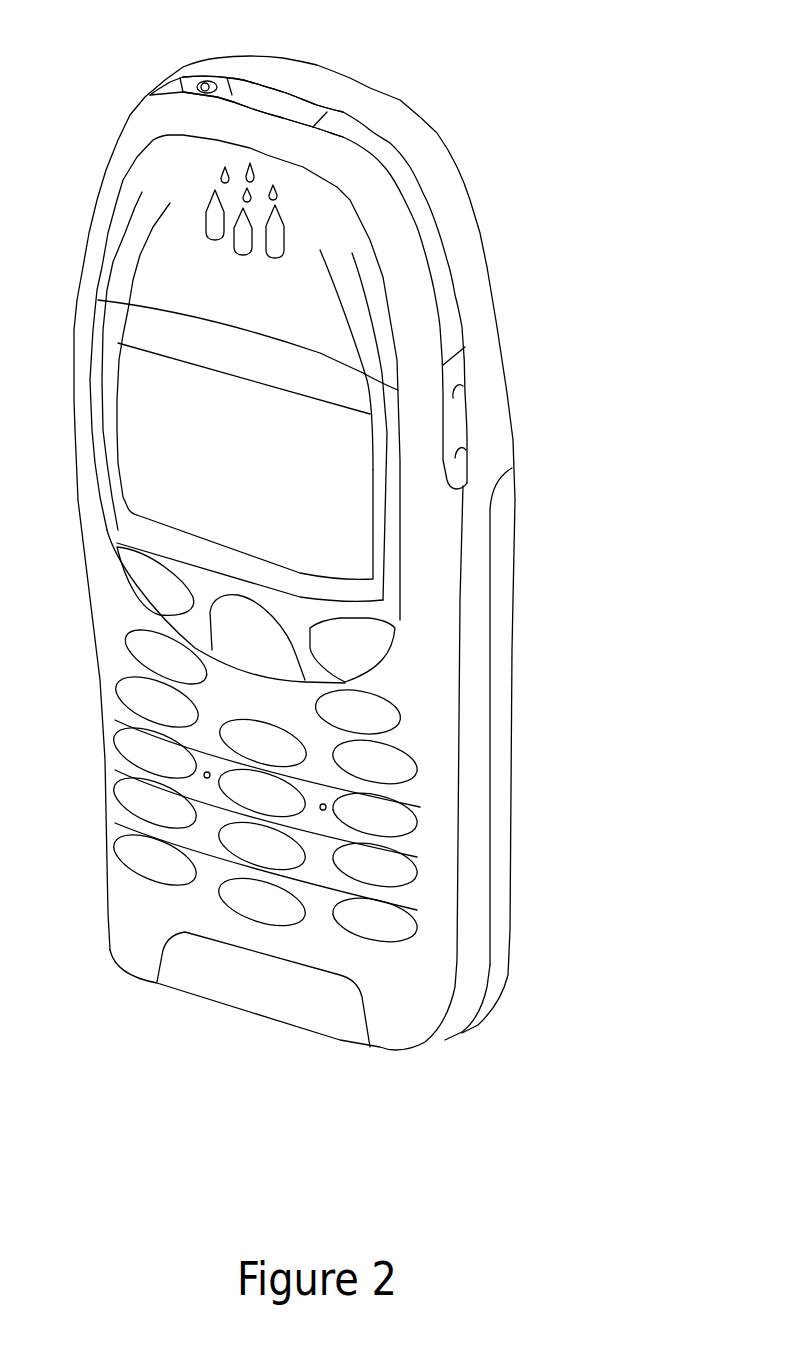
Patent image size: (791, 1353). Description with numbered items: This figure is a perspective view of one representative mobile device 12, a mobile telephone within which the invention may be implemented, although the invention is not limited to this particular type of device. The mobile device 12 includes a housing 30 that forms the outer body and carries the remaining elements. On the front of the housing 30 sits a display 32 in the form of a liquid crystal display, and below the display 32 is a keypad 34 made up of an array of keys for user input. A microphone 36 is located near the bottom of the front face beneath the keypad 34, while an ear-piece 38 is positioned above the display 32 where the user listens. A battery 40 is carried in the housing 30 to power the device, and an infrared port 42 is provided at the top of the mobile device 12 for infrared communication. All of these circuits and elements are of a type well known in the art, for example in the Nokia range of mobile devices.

The mobile device 12 is at (442, 68).
The housing 30 is at (473, 262).
The display 32 is at (347, 517).
The keypad 34 is at (370, 927).
The microphone 36 is at (190, 973).
The ear-piece 38 is at (233, 205).
The battery 40 is at (500, 905).
The infrared port 42 is at (275, 98).